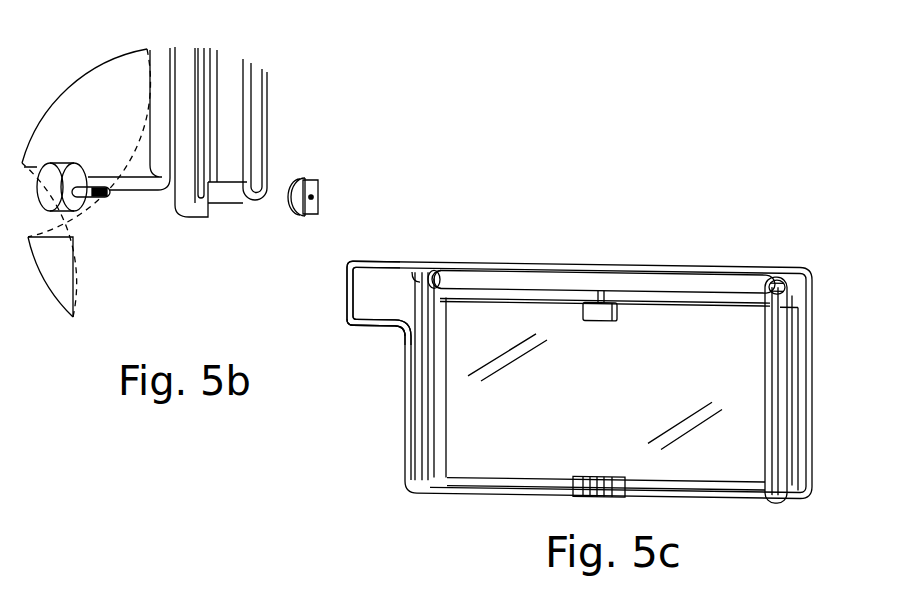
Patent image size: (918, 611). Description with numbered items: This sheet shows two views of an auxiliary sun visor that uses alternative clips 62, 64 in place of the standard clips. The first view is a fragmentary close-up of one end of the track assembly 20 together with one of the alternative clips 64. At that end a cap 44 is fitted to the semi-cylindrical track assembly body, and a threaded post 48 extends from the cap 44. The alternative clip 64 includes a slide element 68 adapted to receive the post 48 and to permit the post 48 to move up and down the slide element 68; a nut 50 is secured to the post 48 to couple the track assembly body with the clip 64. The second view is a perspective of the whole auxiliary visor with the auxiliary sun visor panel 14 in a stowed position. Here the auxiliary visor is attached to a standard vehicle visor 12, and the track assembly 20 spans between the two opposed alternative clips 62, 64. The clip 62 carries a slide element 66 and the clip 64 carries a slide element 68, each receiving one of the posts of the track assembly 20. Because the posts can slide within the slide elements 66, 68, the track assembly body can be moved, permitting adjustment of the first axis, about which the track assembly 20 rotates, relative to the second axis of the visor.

In FIG. 5C, the vehicle visor 12 is at (385, 293).
In FIG. 5C, the auxiliary sun visor panel 14 is at (492, 457).
In FIG. 5C, the track assembly 20 is at (527, 270).
In FIG. 5B, the cap 44 is at (52, 180).
In FIG. 5B, the threaded post 48 is at (85, 194).
In FIG. 5B, the nut 50 is at (317, 185).
In FIG. 5C, the alternative clip 62 is at (388, 311).
In FIG. 5B, the alternative clip 64 is at (285, 128).
In FIG. 5C, the alternative clip 64 is at (795, 337).
In FIG. 5C, the slide element 66 is at (418, 450).
In FIG. 5B, the slide element 68 is at (197, 207).
In FIG. 5C, the slide element 68 is at (768, 415).